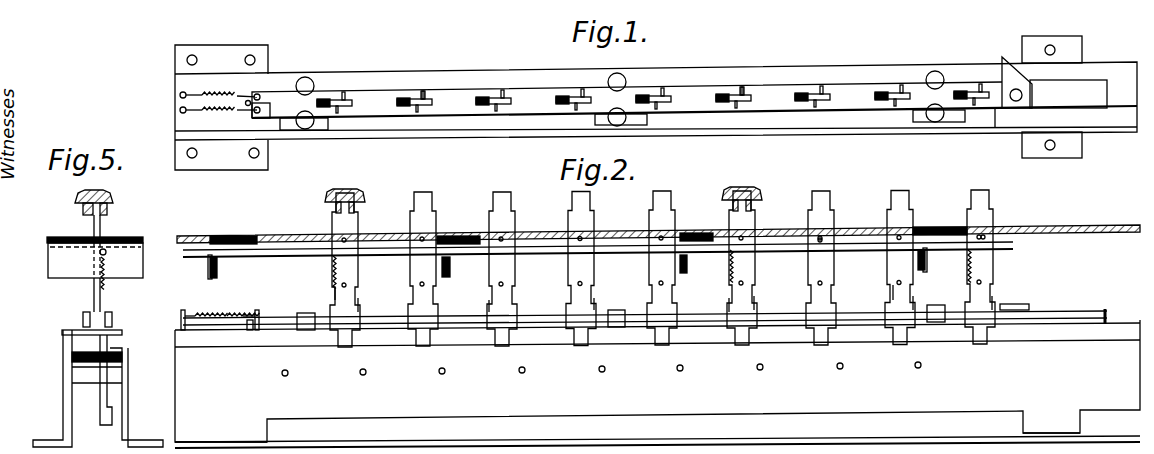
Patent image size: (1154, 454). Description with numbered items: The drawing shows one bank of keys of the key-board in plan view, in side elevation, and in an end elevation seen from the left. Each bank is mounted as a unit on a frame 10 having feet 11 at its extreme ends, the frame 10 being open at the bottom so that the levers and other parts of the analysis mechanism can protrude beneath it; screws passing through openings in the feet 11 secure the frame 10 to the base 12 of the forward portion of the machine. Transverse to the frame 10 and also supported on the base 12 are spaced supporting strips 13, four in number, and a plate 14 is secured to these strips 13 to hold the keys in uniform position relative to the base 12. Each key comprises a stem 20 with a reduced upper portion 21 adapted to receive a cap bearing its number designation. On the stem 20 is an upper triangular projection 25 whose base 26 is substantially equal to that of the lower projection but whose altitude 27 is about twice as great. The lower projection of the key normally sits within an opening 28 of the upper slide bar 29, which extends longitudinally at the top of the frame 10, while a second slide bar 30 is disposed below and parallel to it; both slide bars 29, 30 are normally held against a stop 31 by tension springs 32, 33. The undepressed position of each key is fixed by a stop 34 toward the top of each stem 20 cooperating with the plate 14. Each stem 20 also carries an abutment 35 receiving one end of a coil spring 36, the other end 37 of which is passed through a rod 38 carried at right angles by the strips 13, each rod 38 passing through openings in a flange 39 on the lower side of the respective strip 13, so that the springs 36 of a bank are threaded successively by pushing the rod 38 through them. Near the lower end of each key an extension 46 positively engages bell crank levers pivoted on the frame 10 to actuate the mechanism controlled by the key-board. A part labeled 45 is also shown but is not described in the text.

In FIG. 1, the frame 10 is at (446, 73).
In FIG. 2, the frame 10 is at (657, 381).
In FIG. 5, the frame 10 is at (72, 370).
In FIG. 1, the feet 11 is at (190, 47).
In FIG. 2, the feet 11 is at (216, 441).
In FIG. 5, the feet 11 is at (92, 388).
In FIG. 2, the base 12 is at (657, 435).
In FIG. 2, the supporting strips 13 is at (231, 238).
In FIG. 5, the supporting strips 13 is at (50, 248).
In FIG. 2, the plate 14 is at (452, 238).
In FIG. 5, the plate 14 is at (58, 237).
In FIG. 1, the stem 20 is at (340, 100).
In FIG. 2, the stem 20 is at (516, 268).
In FIG. 5, the stem 20 is at (103, 222).
In FIG. 2, the reduced upper portion 21 is at (496, 192).
In FIG. 5, the reduced upper portion 21 is at (113, 200).
In FIG. 2, the upper triangular projection 25 is at (360, 312).
In FIG. 2, the base 26 is at (596, 306).
In FIG. 2, the altitude 27 is at (488, 305).
In FIG. 1, the opening 28 is at (568, 97).
In FIG. 1, the upper slide bar 29 is at (620, 92).
In FIG. 2, the upper slide bar 29 is at (553, 347).
In FIG. 5, the upper slide bar 29 is at (112, 318).
In FIG. 2, the slide bar 30 is at (841, 337).
In FIG. 5, the slide bar 30 is at (122, 327).
In FIG. 1, the stop 31 is at (681, 96).
In FIG. 2, the stop 31 is at (252, 313).
In FIG. 1, the spring 32 is at (183, 95).
In FIG. 1, the spring 33 is at (183, 110).
In FIG. 2, the spring 33 is at (228, 314).
In FIG. 1, the stop 34 is at (422, 91).
In FIG. 1, the abutment 35 is at (622, 119).
In FIG. 2, the abutment 35 is at (335, 290).
In FIG. 2, the coil spring 36 is at (342, 270).
In FIG. 2, the other end of spring 37 is at (820, 240).
In FIG. 2, the rod 38 is at (658, 226).
In FIG. 2, the flange 39 is at (561, 272).
In FIG. 1, the stop 45 is at (1002, 70).
In FIG. 2, the stop 45 is at (1030, 307).
In FIG. 5, the extension or projection 46 is at (128, 360).